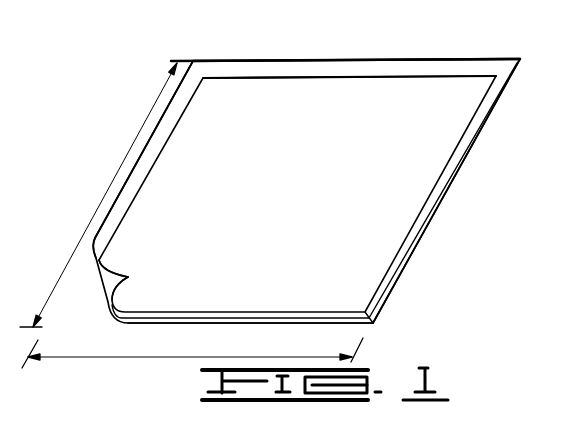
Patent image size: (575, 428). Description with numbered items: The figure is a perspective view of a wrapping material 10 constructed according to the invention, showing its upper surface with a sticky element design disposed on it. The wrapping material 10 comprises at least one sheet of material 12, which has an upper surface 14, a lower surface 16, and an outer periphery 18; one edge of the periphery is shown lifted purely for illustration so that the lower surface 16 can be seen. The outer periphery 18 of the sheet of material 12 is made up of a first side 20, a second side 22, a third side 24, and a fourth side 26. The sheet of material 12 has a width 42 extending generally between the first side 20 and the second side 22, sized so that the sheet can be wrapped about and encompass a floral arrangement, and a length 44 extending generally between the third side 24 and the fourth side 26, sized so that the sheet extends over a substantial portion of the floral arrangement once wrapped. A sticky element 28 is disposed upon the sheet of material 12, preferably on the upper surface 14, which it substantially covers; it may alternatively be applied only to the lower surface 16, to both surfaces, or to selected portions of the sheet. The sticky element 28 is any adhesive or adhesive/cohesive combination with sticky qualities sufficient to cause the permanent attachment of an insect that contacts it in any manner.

The wrapping material 10 is at (278, 185).
The sheet of material 12 is at (308, 164).
The upper surface 14 is at (473, 65).
The lower surface 16 is at (112, 282).
The outer periphery 18 is at (335, 324).
The first side 20 is at (439, 210).
The second side 22 is at (140, 162).
The third side 24 is at (267, 60).
The fourth side 26 is at (217, 325).
The sticky element 28 is at (375, 247).
The width 42 is at (137, 360).
The length 44 is at (102, 200).